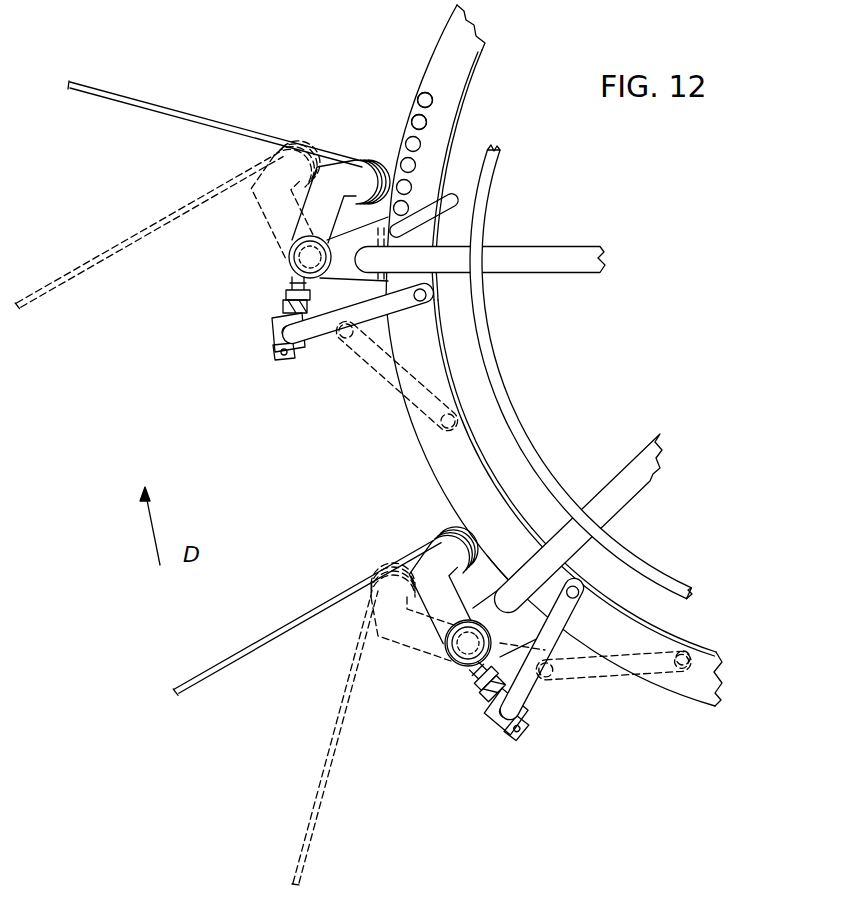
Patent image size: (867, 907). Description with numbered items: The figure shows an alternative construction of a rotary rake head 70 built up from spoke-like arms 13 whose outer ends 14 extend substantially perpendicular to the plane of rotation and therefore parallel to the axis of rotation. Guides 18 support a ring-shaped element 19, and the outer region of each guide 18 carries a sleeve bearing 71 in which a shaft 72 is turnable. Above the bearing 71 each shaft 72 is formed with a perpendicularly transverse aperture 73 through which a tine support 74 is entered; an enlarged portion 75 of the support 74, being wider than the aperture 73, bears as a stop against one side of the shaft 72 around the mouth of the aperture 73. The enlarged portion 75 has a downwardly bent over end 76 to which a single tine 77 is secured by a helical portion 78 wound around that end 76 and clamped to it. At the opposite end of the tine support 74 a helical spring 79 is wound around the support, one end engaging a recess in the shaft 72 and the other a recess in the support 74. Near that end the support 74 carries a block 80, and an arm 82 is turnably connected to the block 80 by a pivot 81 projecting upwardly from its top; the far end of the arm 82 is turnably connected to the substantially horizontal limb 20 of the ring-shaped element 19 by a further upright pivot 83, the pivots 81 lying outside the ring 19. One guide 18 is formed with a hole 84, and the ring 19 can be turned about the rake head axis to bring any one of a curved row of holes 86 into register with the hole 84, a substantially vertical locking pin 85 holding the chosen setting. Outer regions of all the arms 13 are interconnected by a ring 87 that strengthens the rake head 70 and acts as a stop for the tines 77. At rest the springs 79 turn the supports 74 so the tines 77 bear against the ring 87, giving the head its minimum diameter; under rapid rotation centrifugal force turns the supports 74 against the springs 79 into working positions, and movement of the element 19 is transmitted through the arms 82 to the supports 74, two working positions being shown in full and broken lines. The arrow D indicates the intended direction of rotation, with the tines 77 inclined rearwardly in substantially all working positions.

The spoke-like arm 13 is at (585, 247).
The outer end of arm 14 is at (504, 567).
The guide 18 is at (368, 231).
The ring-shaped element 19 is at (428, 456).
The horizontal limb of ring-shaped element 20 is at (680, 682).
The rake head 70 is at (433, 53).
The sleeve bearing 71 is at (292, 275).
The shaft 72 is at (289, 258).
The transverse aperture 73 is at (492, 632).
The tine support 74 is at (283, 306).
The enlarged portion 75 is at (304, 224).
The bent over end 76 is at (346, 168).
The tine 77 is at (197, 118).
The helical portion 78 is at (375, 170).
The helical spring 79 is at (273, 327).
The block 80 is at (274, 352).
The pivot 81 is at (301, 342).
The arm 82 is at (331, 330).
The upright pivot 83 is at (430, 295).
The hole 84 is at (428, 236).
The locking pin 85 is at (442, 204).
The holes 86 is at (411, 120).
The ring 87 is at (511, 410).